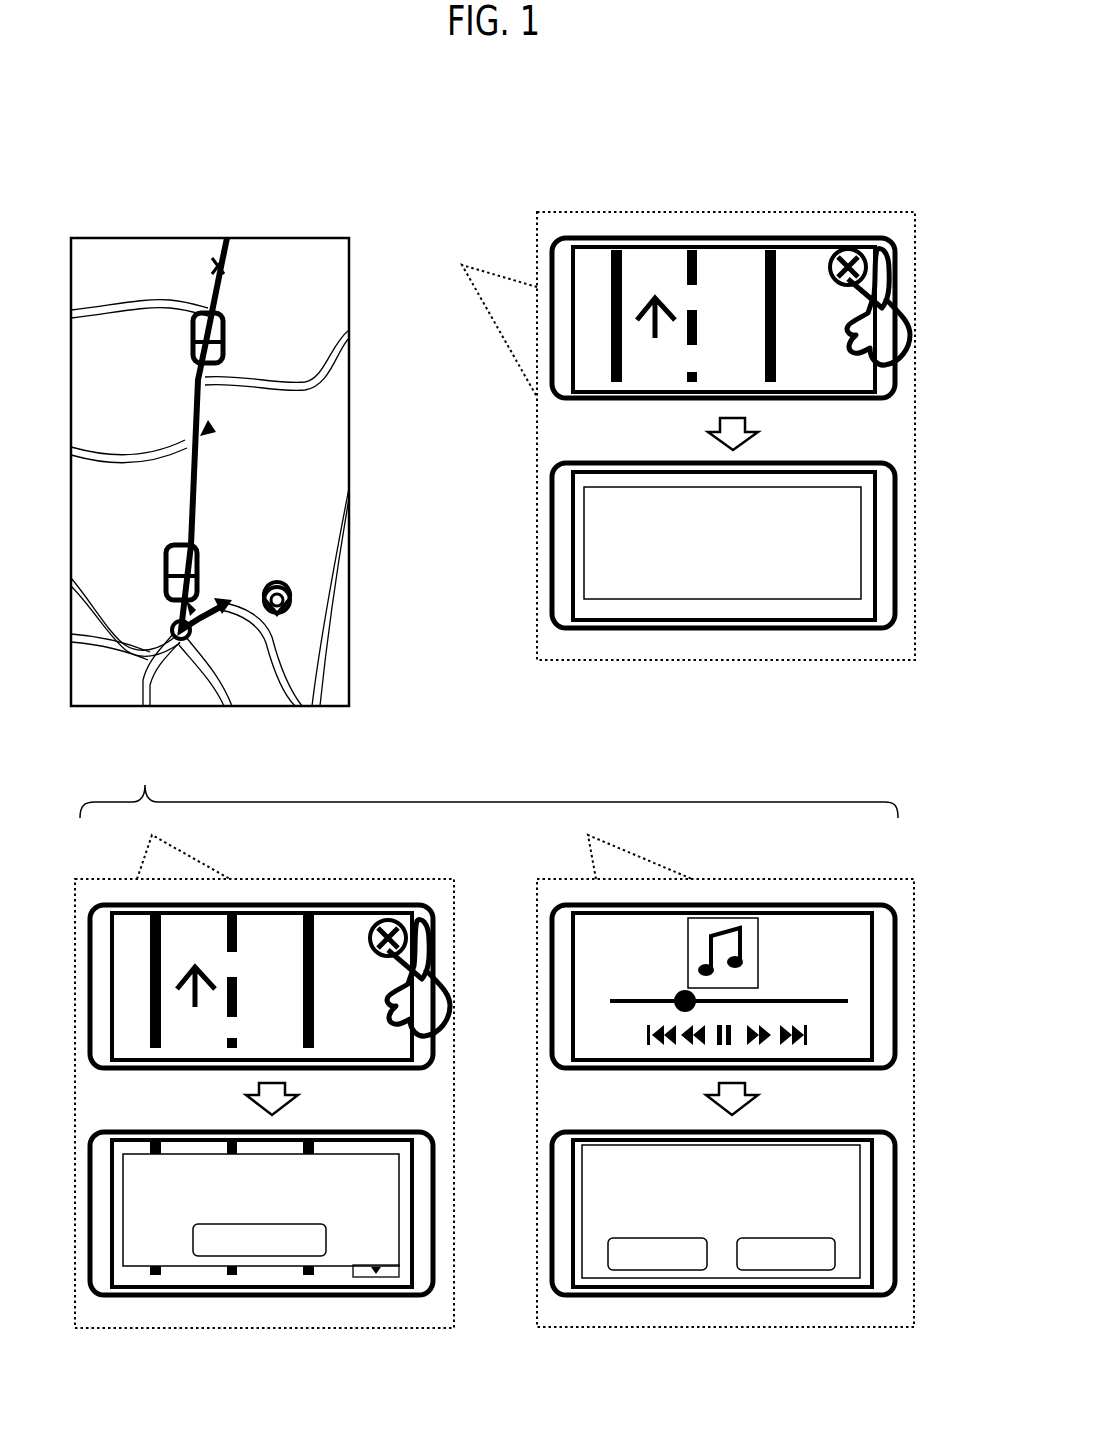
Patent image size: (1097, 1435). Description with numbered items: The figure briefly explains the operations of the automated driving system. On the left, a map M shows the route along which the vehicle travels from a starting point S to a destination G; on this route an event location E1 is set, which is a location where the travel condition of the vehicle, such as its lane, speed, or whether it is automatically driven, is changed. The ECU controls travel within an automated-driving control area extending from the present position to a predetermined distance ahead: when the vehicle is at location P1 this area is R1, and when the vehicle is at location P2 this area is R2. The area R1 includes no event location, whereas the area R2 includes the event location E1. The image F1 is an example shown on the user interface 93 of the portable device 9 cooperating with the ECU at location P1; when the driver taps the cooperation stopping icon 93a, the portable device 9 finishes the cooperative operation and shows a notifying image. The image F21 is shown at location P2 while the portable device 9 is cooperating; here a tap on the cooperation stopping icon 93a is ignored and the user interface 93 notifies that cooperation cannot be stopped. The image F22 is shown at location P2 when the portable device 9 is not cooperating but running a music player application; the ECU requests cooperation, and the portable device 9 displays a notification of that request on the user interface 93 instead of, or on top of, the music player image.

The map M is at (261, 444).
The starting point S is at (227, 270).
The location P1 is at (226, 333).
The automated-driving control area R1 is at (206, 404).
The automated-driving control area R2 is at (222, 605).
The destination G is at (284, 612).
The event location E1 is at (194, 634).
The location P2 is at (164, 595).
The image F1 is at (800, 212).
The image F21 is at (404, 853).
The image F22 is at (854, 853).
The portable device 9 is at (560, 468).
The user interface 93 is at (896, 383).
The cooperation stopping icon 93a is at (862, 258).